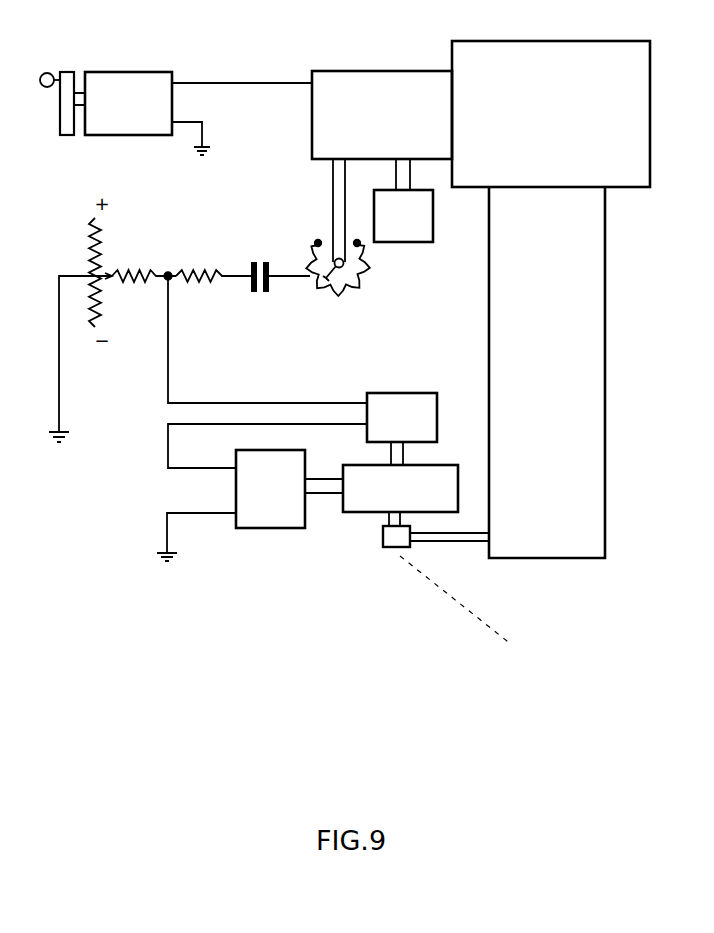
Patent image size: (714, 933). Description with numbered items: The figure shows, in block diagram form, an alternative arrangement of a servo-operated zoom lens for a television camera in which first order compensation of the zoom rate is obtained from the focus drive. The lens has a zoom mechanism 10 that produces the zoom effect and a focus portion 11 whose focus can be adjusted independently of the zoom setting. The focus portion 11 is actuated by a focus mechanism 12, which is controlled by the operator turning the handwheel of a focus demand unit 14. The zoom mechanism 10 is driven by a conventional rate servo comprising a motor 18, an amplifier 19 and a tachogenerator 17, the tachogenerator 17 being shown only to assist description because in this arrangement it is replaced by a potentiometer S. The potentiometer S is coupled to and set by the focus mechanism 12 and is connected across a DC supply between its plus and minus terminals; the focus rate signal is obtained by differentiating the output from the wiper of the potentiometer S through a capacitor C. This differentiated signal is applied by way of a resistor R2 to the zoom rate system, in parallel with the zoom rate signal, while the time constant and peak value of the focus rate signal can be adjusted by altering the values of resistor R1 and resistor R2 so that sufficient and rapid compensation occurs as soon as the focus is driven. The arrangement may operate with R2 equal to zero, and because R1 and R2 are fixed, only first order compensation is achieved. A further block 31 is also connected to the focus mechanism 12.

The zoom mechanism 10 is at (547, 372).
The focus portion 11 is at (551, 114).
The focus mechanism 12 is at (382, 166).
The focus demand unit 14 is at (176, 113).
The tachogenerator 17 is at (402, 429).
The motor 18 is at (427, 555).
The amplifier 19 is at (289, 489).
The switch unit 31 is at (403, 200).
The resistor R1 is at (144, 266).
The resistor R2 is at (213, 266).
The capacitor C is at (282, 265).
The potentiometer S is at (348, 256).